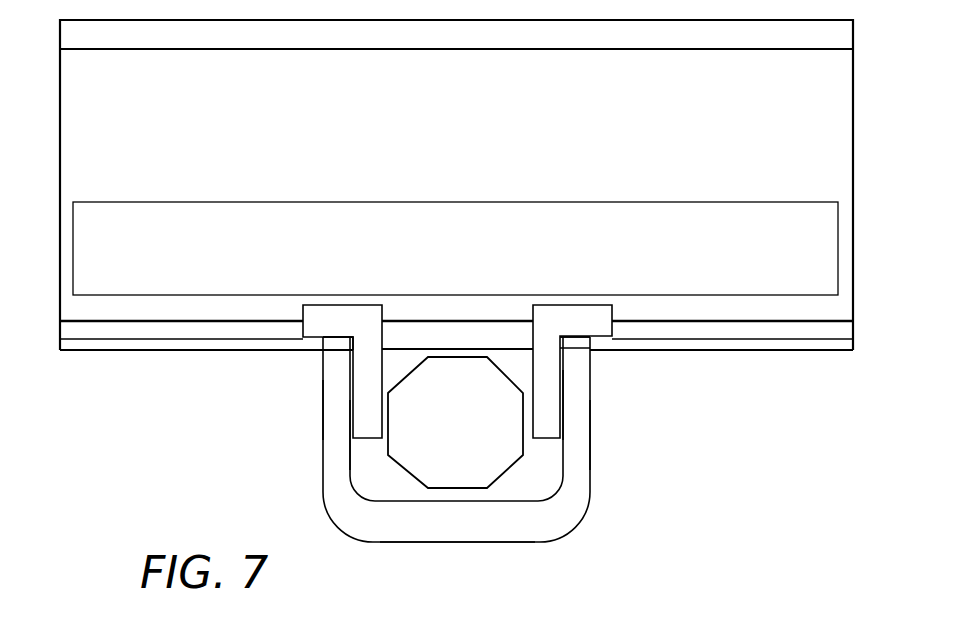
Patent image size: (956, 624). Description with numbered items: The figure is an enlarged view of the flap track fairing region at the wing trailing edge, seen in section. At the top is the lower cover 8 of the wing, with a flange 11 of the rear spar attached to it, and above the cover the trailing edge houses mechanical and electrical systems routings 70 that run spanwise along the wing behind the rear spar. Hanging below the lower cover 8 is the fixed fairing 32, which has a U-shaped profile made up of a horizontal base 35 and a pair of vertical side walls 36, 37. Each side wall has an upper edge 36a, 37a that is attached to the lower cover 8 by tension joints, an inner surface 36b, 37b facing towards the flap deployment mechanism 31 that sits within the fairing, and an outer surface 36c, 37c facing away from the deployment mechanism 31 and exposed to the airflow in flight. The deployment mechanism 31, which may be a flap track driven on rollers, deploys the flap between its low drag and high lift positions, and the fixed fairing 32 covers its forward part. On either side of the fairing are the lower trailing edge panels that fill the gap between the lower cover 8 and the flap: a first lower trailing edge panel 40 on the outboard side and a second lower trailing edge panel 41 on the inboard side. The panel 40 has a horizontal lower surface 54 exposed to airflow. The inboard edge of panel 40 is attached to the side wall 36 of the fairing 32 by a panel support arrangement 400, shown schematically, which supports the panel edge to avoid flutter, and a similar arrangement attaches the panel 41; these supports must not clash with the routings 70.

The panel support arrangement 400 is at (288, 262).
The mechanical and electrical systems routings 70 is at (380, 218).
The flange 11 is at (643, 320).
The lower cover 8 is at (767, 332).
The second lower trailing edge panel 41 is at (727, 345).
The first lower trailing edge panel 40 is at (105, 345).
The lower surface 54 is at (145, 352).
The fixed fairing 32 is at (456, 421).
The horizontal base 35 is at (457, 518).
The side wall 36 is at (337, 450).
The upper edge 36a is at (340, 348).
The inner surface 36b is at (355, 460).
The outer surface 36c is at (320, 410).
The side wall 37 is at (575, 410).
The upper edge 37a is at (578, 348).
The inner surface 37b is at (558, 382).
The outer surface 37c is at (593, 460).
The deployment mechanism 31 is at (462, 362).